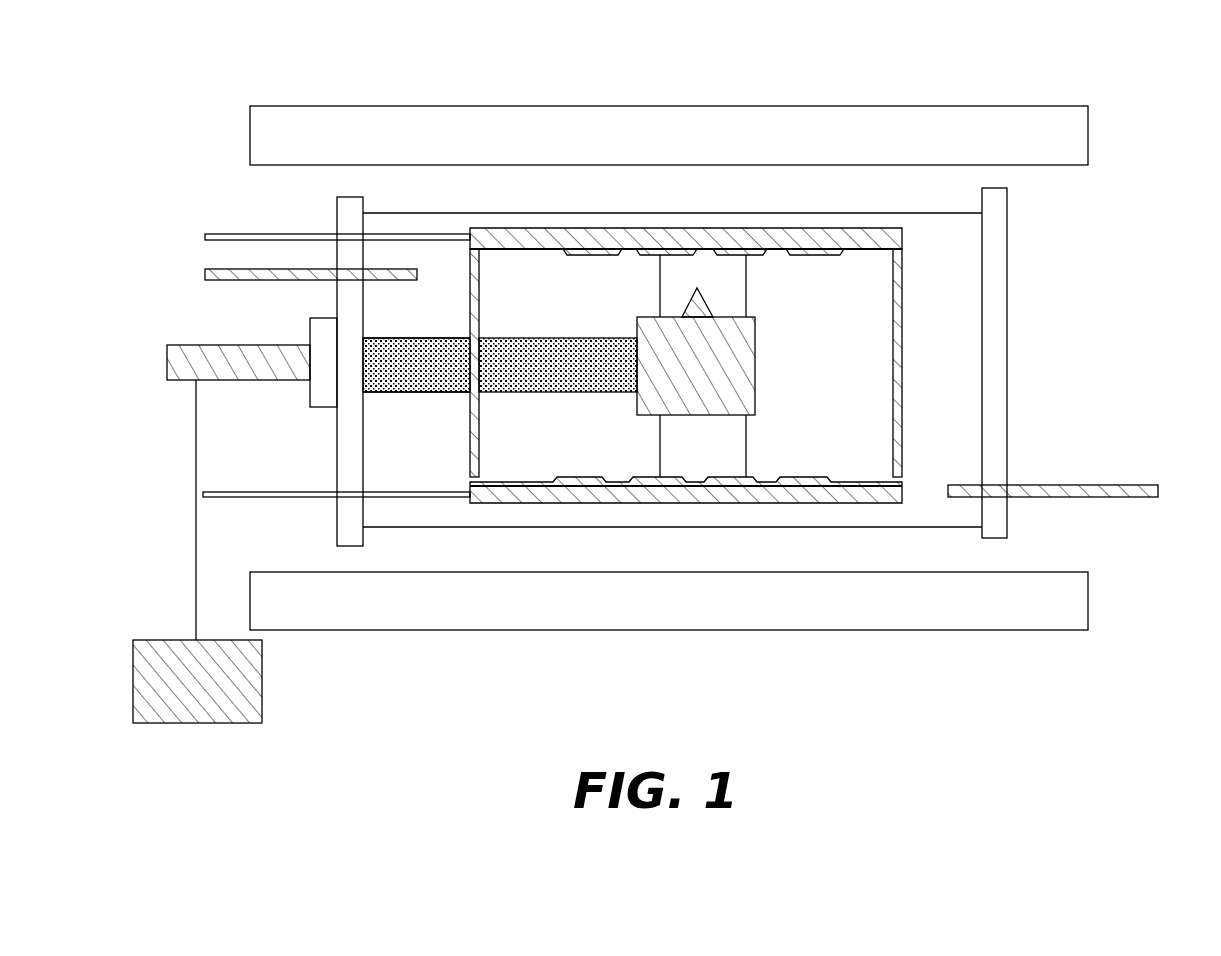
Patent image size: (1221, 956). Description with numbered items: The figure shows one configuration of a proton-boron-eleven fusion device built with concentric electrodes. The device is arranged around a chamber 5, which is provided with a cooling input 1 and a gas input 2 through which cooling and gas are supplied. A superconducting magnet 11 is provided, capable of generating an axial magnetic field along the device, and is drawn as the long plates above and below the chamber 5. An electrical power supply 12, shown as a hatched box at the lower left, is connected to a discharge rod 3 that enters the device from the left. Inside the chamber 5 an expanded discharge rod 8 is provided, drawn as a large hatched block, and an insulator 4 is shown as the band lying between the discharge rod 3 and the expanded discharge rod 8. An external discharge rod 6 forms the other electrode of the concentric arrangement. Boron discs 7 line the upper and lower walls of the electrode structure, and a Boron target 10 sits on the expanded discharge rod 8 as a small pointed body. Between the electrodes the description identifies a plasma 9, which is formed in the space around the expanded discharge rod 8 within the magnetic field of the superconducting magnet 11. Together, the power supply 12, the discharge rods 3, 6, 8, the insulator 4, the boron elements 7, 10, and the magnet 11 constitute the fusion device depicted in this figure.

The cooling input 1 is at (180, 236).
The gas input 2 is at (180, 276).
The discharge rod 3 is at (212, 376).
The insulator 4 is at (404, 376).
The chamber 5 is at (400, 441).
The external discharge rod 6 is at (490, 464).
The Boron discs 7 is at (491, 416).
The expanded discharge rod 8 is at (688, 376).
The plasma 9 is at (649, 281).
The Boron target 10 is at (721, 305).
The superconducting magnet 11 is at (283, 147).
The electrical power supply 12 is at (180, 694).